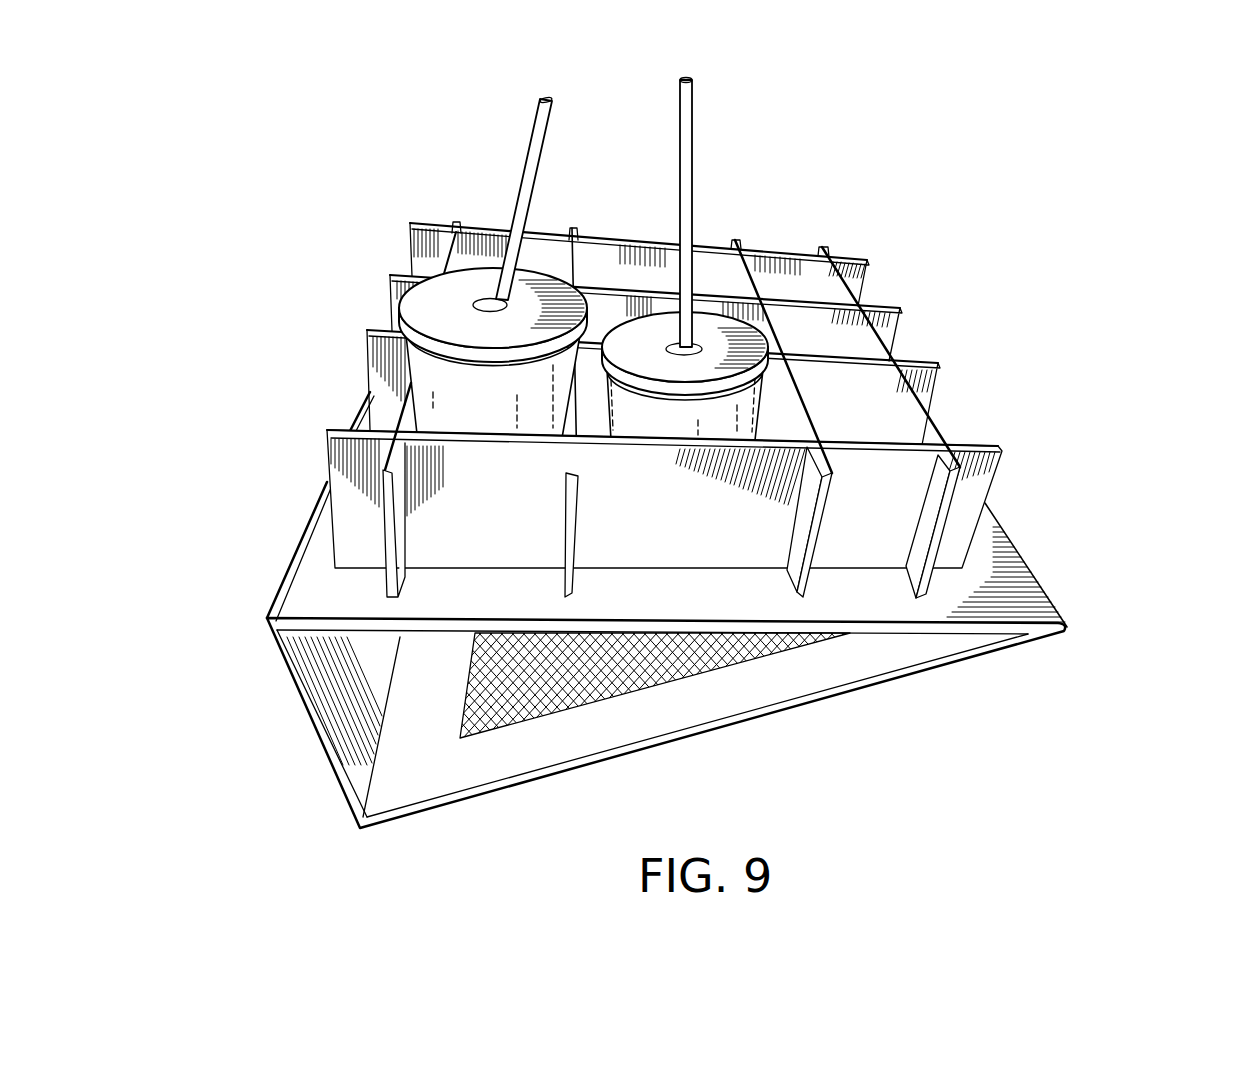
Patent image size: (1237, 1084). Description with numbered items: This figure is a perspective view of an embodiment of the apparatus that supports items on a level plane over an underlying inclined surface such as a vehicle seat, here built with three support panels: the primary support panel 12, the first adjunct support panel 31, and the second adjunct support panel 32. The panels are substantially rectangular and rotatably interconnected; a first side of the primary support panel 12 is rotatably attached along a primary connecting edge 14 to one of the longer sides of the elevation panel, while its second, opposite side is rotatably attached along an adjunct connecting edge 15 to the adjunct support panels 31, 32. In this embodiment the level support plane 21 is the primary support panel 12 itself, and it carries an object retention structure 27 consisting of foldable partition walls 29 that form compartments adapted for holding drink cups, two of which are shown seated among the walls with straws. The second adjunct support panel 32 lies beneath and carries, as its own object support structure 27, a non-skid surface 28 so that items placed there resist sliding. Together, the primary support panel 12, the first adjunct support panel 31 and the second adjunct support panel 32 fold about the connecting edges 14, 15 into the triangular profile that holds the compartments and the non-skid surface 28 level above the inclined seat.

The primary support panel 12 is at (357, 596).
The primary connecting edge 14 is at (273, 607).
The adjunct connecting edge 15 is at (1068, 628).
The level support plane 21 is at (357, 410).
The object retention structure 27 is at (900, 347).
The non-skid surface 28 is at (572, 682).
The foldable partition walls 29 is at (325, 462).
The first adjunct support panel 31 is at (383, 832).
The second adjunct support panel 32 is at (503, 756).